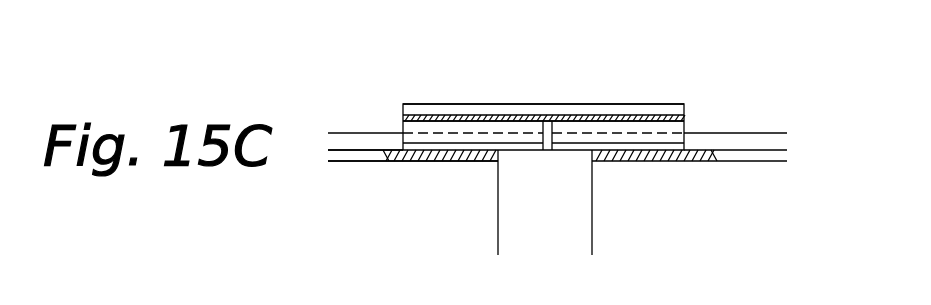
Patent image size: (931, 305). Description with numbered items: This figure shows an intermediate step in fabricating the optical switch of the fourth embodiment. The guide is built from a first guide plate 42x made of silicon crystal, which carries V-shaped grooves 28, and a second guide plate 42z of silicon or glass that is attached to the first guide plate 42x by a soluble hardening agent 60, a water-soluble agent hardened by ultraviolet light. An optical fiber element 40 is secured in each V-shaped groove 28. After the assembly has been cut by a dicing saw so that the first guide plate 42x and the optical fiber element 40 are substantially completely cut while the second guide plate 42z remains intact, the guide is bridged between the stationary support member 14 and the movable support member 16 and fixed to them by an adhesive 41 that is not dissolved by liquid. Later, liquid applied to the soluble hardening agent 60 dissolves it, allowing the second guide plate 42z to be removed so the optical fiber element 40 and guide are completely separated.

The stationary support member 14 is at (692, 212).
The movable support member 16 is at (437, 200).
The V-shaped groove 28 is at (487, 128).
The optical fiber element 40 is at (352, 133).
The adhesive 41 is at (720, 152).
The first guide plate 42x is at (686, 123).
The second guide plate 42z is at (678, 104).
The soluble hardening agent 60 is at (686, 112).